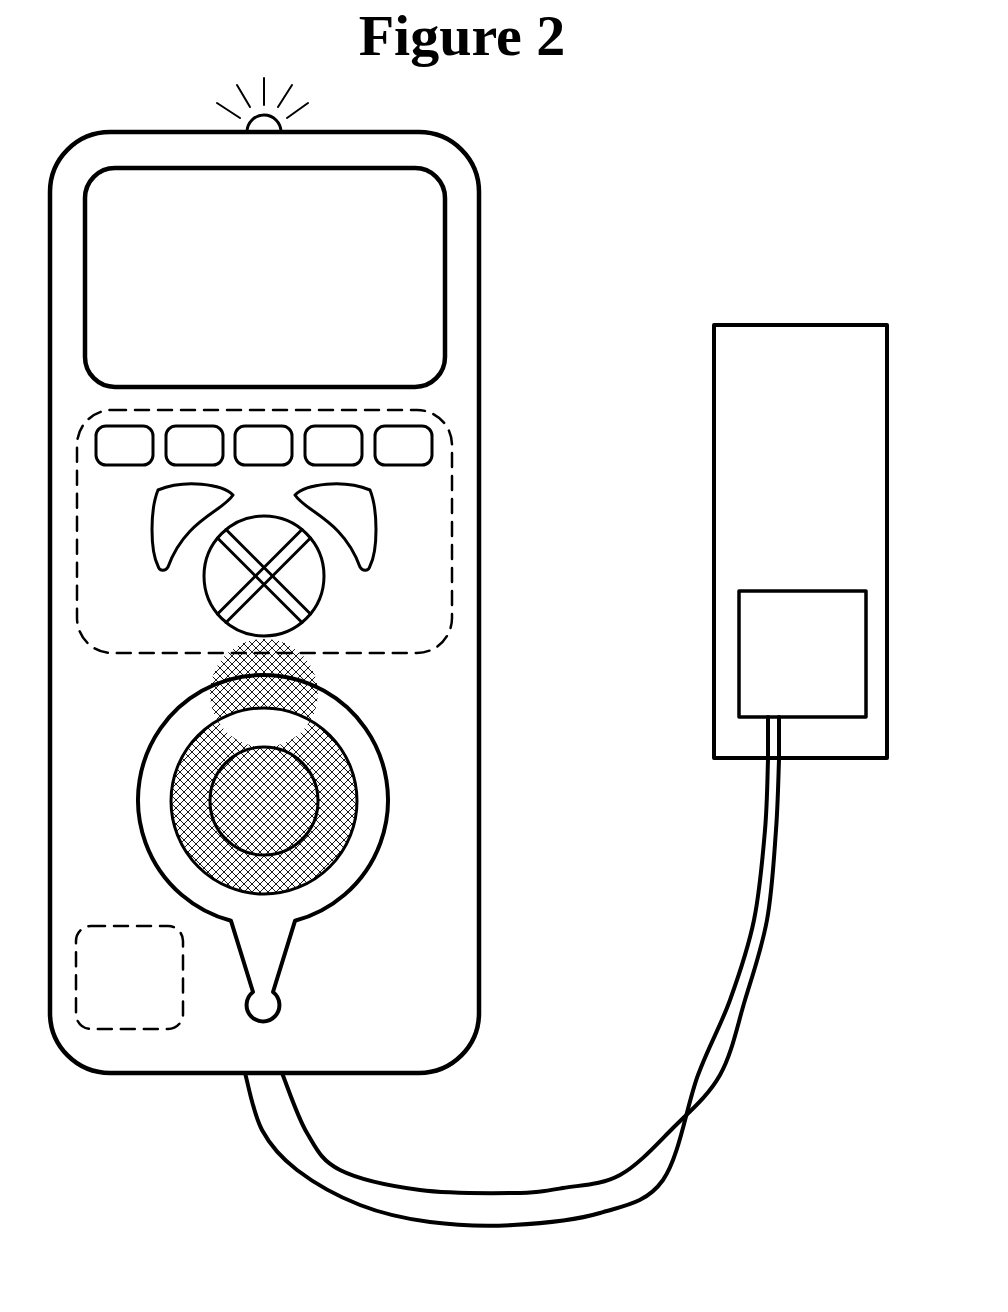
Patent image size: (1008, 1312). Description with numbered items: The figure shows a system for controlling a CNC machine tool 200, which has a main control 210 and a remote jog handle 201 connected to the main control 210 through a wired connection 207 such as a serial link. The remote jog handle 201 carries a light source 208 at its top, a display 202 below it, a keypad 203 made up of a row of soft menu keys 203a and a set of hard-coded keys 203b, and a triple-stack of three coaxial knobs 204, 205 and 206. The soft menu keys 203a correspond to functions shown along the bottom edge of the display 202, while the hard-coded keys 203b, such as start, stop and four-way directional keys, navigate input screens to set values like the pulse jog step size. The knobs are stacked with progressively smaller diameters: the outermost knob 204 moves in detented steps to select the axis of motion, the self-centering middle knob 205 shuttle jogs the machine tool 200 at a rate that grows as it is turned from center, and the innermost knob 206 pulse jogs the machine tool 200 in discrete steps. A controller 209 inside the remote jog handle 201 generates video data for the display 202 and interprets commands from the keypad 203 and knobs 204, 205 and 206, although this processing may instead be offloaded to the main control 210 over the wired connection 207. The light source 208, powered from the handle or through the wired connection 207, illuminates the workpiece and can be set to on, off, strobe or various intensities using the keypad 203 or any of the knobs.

The machine tool 200 is at (781, 525).
The remote jog handle 201 is at (480, 198).
The display 202 is at (443, 283).
The keypad 203 is at (443, 428).
The soft menu keys 203a is at (496, 412).
The hard-coded keys 203b is at (496, 486).
The outermost knob 204 is at (388, 787).
The middle knob 205 is at (358, 805).
The innermost knob 206 is at (353, 837).
The wired connection 207 is at (714, 1090).
The light source 208 is at (252, 122).
The controller 209 is at (109, 989).
The main control 210 is at (781, 665).